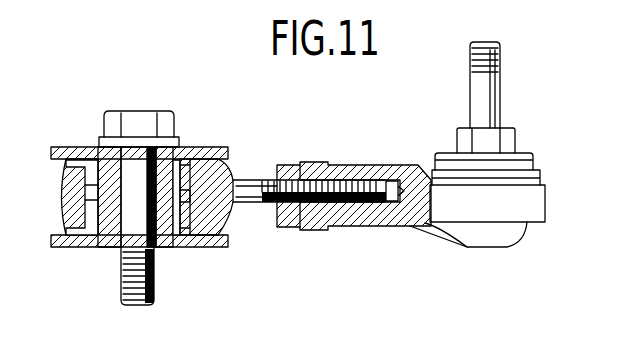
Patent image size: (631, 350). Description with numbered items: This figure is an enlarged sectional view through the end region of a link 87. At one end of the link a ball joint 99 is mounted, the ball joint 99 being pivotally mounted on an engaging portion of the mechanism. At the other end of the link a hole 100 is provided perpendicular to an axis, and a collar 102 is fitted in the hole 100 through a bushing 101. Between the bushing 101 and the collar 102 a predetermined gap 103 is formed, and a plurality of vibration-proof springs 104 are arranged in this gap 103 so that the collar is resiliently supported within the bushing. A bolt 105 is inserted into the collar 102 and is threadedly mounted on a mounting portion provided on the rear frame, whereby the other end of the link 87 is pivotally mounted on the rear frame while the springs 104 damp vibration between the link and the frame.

The link 87 is at (247, 183).
The ball joint 99 is at (533, 205).
The hole 100 is at (80, 207).
The bushing 101 is at (84, 158).
The collar 102 is at (112, 241).
The gap 103 is at (178, 160).
The vibration-proof springs 104 is at (157, 203).
The bolt 105 is at (143, 114).